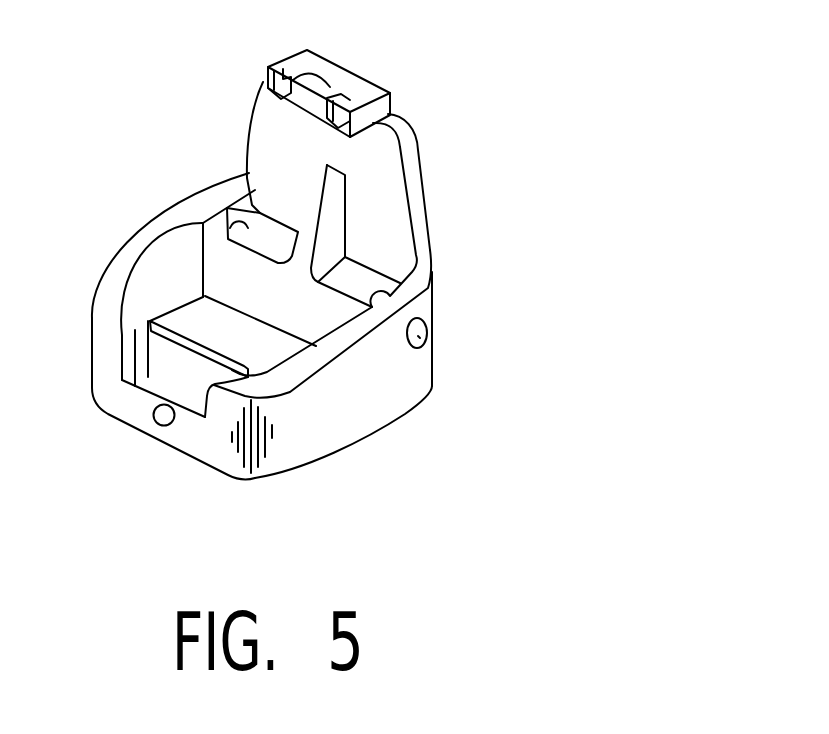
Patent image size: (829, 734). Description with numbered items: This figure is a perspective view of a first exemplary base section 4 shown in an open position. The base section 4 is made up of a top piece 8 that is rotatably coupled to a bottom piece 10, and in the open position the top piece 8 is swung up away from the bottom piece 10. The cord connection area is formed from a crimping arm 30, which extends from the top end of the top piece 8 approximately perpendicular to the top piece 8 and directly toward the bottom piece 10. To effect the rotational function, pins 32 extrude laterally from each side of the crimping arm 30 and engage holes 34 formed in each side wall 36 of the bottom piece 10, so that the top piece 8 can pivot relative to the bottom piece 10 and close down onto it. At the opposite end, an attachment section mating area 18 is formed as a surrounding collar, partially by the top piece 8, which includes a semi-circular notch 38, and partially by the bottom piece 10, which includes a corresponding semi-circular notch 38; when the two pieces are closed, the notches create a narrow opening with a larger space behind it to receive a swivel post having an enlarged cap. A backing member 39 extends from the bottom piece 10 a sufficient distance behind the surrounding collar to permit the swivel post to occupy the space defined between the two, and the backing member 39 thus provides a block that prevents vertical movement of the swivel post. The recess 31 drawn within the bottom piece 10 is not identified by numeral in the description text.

The base section 4 is at (337, 435).
The top piece 8 is at (413, 178).
The bottom piece 10 is at (270, 478).
The attachment section mating area 18 is at (175, 452).
The crimping arm 30 is at (231, 254).
The recess floor 31 is at (223, 283).
The pins 32 is at (430, 323).
The holes 34 is at (423, 338).
The side wall 36 is at (397, 417).
The semi-circular notch 38 is at (303, 67).
The backing member 39 is at (160, 307).